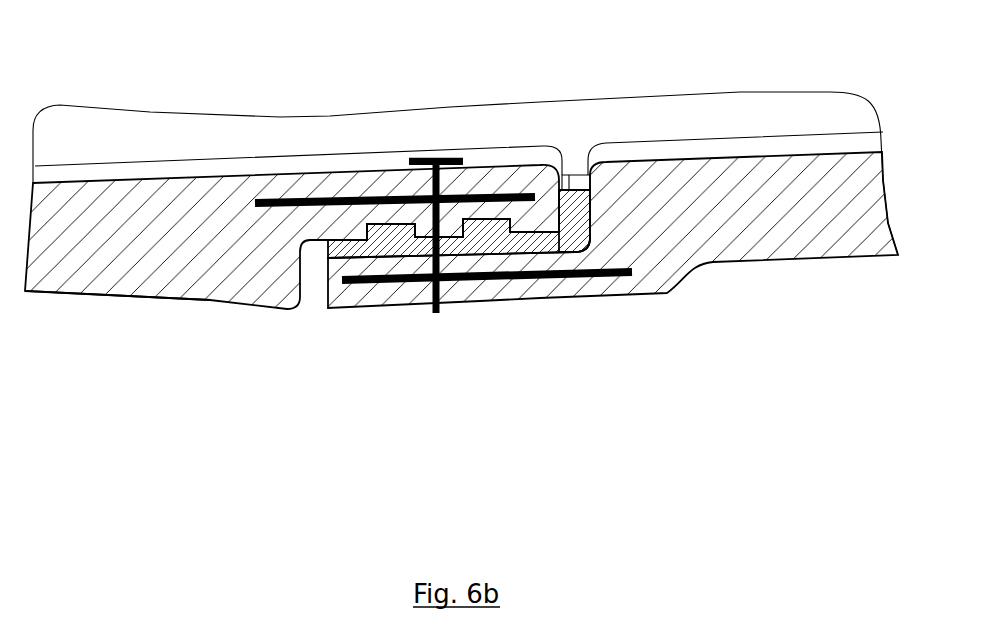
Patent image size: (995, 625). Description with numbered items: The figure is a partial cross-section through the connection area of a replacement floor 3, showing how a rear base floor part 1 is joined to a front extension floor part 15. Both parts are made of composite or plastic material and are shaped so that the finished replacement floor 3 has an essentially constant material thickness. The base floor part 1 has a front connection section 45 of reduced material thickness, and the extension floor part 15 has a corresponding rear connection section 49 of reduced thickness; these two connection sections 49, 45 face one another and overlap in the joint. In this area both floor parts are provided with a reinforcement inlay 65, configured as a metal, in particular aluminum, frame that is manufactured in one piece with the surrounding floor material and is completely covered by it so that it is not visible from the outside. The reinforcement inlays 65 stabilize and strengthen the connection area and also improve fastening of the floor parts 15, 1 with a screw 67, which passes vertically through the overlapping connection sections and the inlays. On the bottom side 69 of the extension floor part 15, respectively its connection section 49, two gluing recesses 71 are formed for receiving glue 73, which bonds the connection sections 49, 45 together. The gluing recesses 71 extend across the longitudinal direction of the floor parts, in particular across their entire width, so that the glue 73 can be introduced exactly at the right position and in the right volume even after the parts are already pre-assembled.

The base floor part 1 is at (773, 105).
The replacement floor 3 is at (320, 118).
The extension floor part 15 is at (96, 120).
The front connection section 45 is at (341, 300).
The rear connection section 49 is at (543, 228).
The reinforcement inlay 65 is at (267, 208).
The screw 67 is at (420, 157).
The bottom side 69 is at (70, 292).
The gluing recesses 71 is at (393, 224).
The glue 73 is at (410, 225).